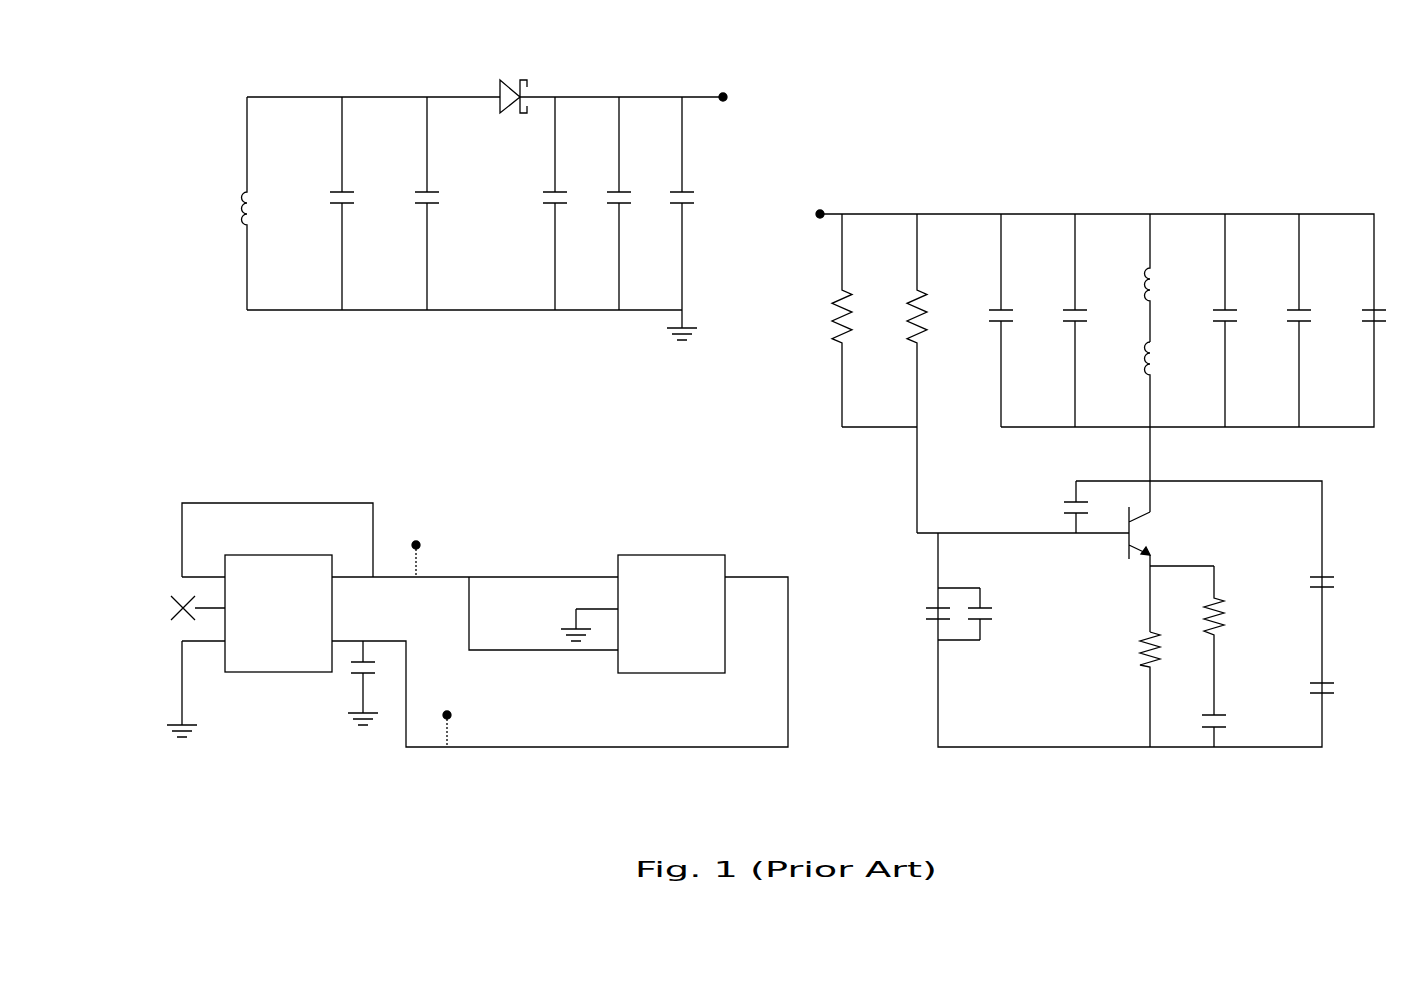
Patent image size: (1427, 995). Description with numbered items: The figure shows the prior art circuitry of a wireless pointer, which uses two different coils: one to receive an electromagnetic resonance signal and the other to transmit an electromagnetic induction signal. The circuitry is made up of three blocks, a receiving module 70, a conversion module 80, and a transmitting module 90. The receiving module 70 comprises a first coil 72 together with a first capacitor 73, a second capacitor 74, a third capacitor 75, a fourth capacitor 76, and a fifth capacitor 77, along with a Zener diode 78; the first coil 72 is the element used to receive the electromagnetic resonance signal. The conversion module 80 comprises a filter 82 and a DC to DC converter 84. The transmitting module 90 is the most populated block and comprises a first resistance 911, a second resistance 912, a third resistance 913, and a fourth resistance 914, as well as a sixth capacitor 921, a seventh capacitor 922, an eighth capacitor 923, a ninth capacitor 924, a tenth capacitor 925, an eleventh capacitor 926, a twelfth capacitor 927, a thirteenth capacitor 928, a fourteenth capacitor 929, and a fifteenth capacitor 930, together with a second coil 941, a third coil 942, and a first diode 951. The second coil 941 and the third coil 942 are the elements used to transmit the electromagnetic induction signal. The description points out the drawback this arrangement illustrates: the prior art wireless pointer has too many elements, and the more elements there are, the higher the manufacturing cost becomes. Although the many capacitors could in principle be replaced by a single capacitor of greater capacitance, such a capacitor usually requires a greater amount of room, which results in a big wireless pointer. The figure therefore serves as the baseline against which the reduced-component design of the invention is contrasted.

The receiving module 70 is at (483, 201).
The first coil 72 is at (216, 203).
The first capacitor 73 is at (323, 203).
The second capacitor 74 is at (412, 203).
The third capacitor 75 is at (536, 203).
The fourth capacitor 76 is at (605, 203).
The fifth capacitor 77 is at (670, 218).
The Zener diode 78 is at (510, 79).
The conversion module 80 is at (477, 654).
The filter 82 is at (292, 628).
The DC to DC converter 84 is at (688, 628).
The transmitting module 90 is at (1077, 500).
The first resistance 911 is at (813, 320).
The second resistance 912 is at (894, 373).
The third resistance 913 is at (1121, 689).
The fourth resistance 914 is at (1191, 640).
The sixth capacitor 921 is at (979, 320).
The seventh capacitor 922 is at (1052, 320).
The eighth capacitor 923 is at (1203, 320).
The ninth capacitor 924 is at (1277, 320).
The tenth capacitor 925 is at (1352, 322).
The eleventh capacitor 926 is at (931, 614).
The twelfth capacitor 927 is at (1009, 614).
The thirteenth capacitor 928 is at (1350, 580).
The fourteenth capacitor 929 is at (1350, 692).
The fifteenth capacitor 930 is at (1243, 730).
The second coil 941 is at (1121, 278).
The third coil 942 is at (1121, 427).
The first diode 951 is at (1169, 569).